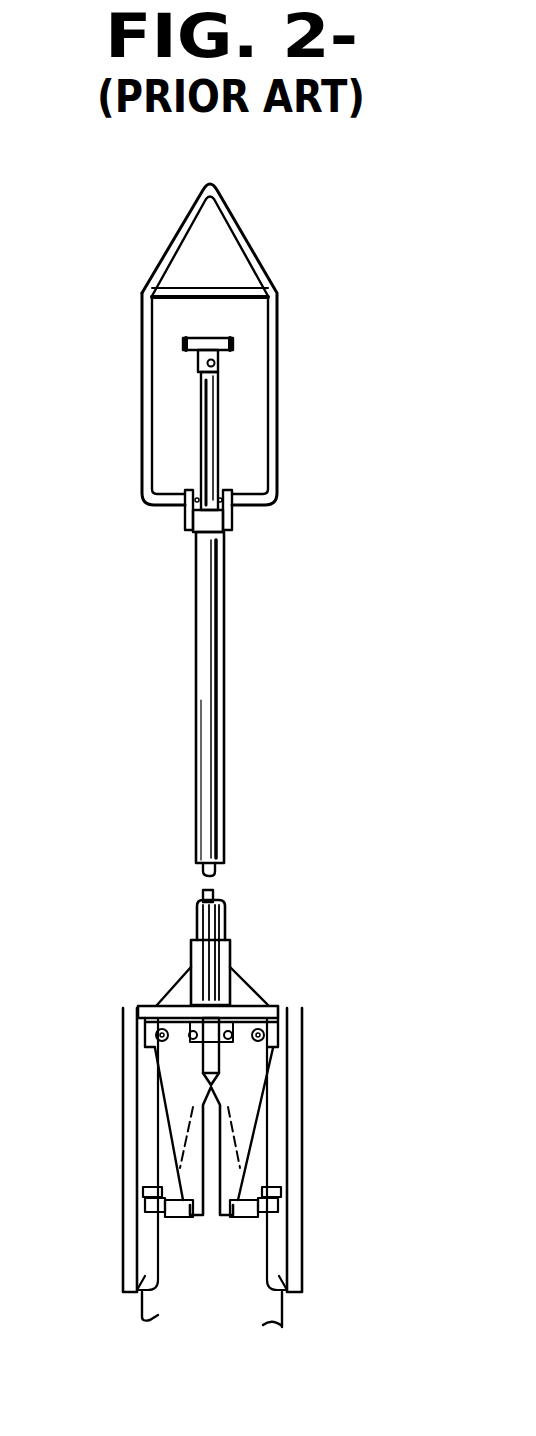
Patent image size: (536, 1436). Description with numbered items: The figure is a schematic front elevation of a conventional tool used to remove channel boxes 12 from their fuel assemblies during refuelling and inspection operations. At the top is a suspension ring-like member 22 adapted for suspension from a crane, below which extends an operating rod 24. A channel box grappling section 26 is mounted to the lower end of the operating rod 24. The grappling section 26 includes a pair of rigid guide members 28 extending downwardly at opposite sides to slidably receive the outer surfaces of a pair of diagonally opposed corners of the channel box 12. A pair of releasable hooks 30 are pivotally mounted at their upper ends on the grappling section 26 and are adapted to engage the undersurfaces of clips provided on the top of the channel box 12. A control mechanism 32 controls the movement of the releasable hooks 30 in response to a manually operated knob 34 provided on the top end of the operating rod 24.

The suspension ring-like member 22 is at (262, 255).
The manually operated knob 34 is at (213, 338).
The operating rod 24 is at (222, 663).
The channel box grappling section 26 is at (254, 1106).
The control mechanism 32 is at (228, 1017).
The releasable hooks 30 is at (243, 1108).
The rigid guide members 28 is at (293, 1220).
The channel box 12 is at (282, 1307).